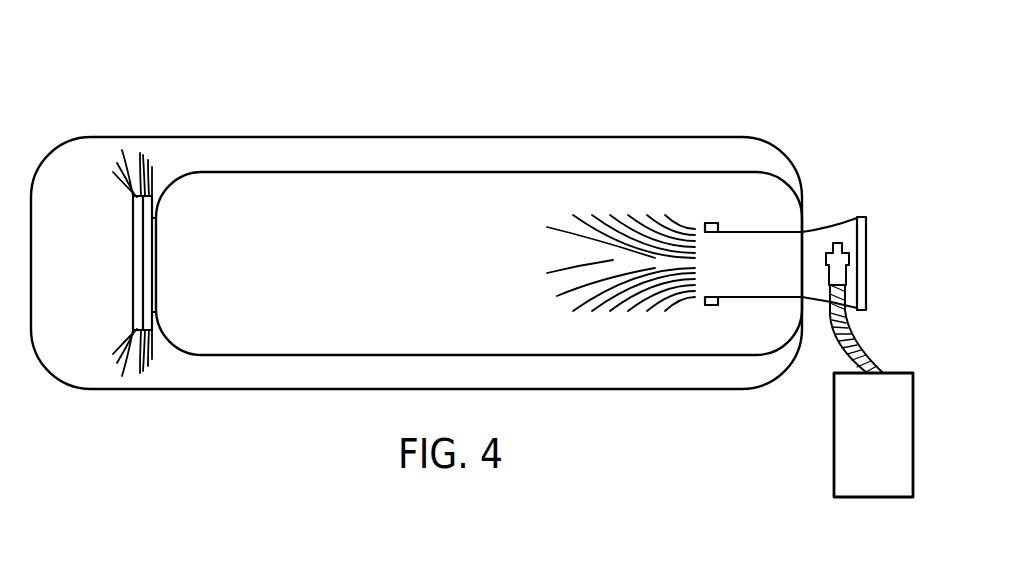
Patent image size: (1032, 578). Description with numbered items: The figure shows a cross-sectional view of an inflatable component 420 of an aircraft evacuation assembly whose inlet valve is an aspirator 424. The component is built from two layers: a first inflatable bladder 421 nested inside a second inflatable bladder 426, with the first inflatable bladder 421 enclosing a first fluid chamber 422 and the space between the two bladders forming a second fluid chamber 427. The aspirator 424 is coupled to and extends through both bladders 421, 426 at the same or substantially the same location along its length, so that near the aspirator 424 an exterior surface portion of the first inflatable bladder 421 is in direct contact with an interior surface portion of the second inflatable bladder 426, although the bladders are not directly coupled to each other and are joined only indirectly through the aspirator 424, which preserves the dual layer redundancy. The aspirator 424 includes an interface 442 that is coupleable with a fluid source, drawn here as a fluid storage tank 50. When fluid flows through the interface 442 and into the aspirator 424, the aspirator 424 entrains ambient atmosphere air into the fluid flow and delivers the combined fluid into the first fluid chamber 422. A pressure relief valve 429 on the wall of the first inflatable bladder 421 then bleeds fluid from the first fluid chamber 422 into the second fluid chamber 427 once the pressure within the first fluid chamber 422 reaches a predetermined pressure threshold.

The inflatable component 420 is at (140, 48).
The first inflatable bladder 421 is at (309, 172).
The first fluid chamber 422 is at (362, 198).
The second inflatable bladder 426 is at (541, 138).
The second fluid chamber 427 is at (614, 152).
The aspirator 424 is at (813, 247).
The pressure relief valve 429 is at (102, 304).
The interface 442 is at (842, 338).
The fluid storage tank 50 is at (888, 446).